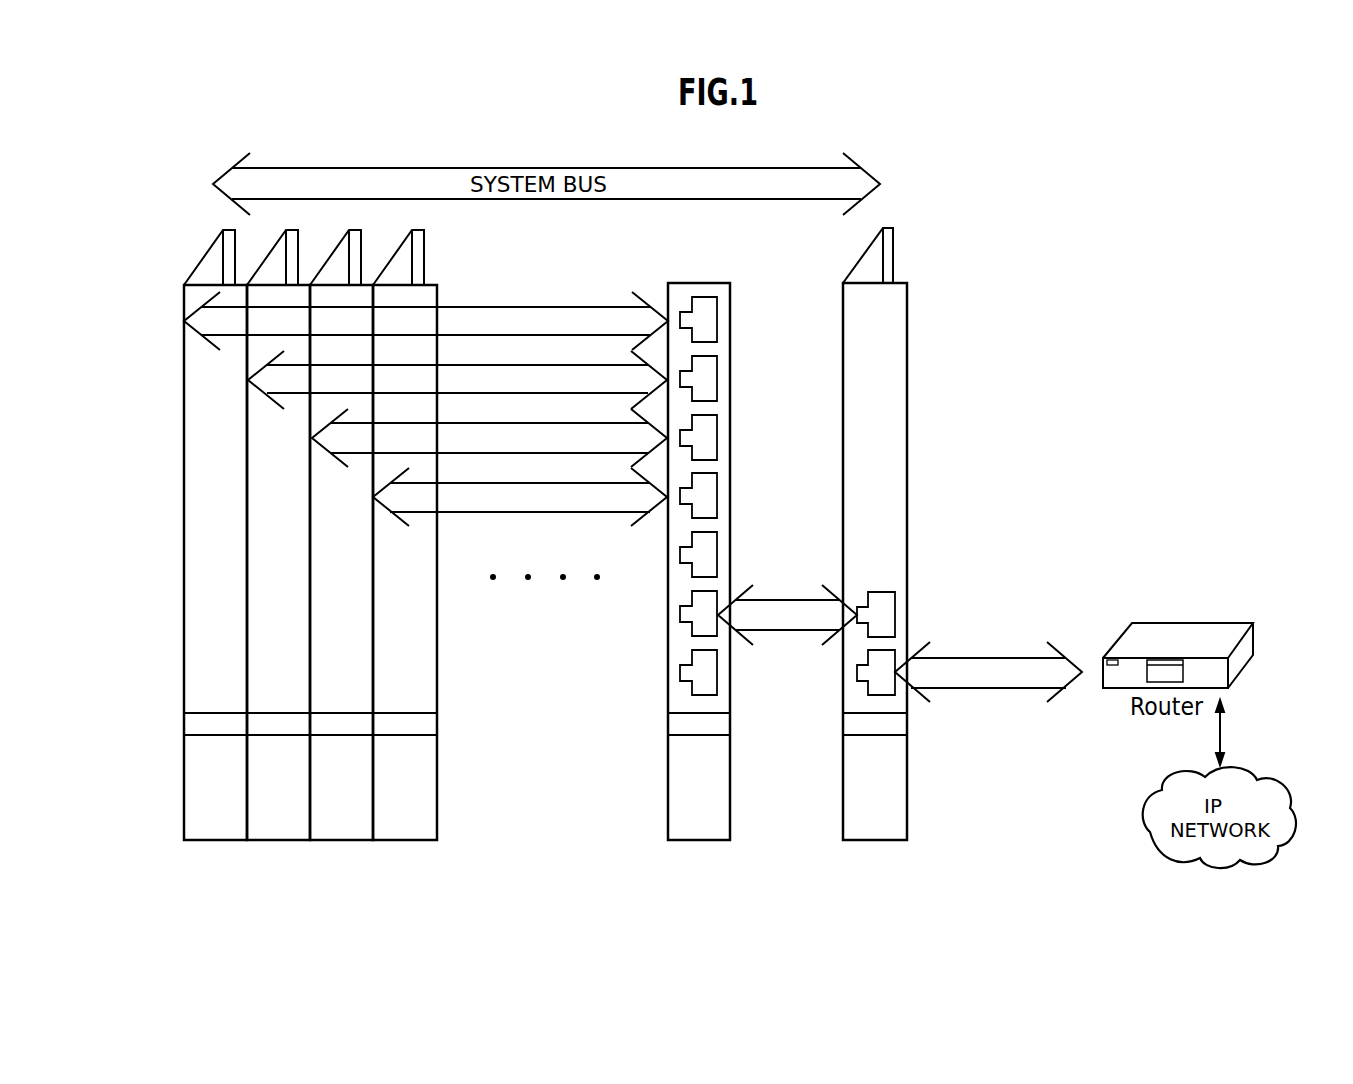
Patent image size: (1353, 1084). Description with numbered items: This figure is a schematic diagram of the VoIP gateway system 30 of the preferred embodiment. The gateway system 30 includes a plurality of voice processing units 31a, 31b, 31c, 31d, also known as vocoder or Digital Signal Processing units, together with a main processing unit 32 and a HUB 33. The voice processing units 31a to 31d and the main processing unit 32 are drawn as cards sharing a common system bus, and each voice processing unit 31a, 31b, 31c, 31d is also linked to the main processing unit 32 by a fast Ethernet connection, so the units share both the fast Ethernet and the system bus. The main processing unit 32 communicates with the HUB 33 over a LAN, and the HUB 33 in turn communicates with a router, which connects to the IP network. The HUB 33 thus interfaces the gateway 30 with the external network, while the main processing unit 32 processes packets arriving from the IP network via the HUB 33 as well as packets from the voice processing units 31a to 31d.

The gateway system 30 is at (875, 850).
The voice processing unit 31a is at (197, 405).
The voice processing unit 31b is at (262, 478).
The voice processing unit 31c is at (323, 558).
The voice processing unit 31d is at (398, 625).
The main processing unit 32 is at (678, 786).
The HUB 33 is at (857, 785).